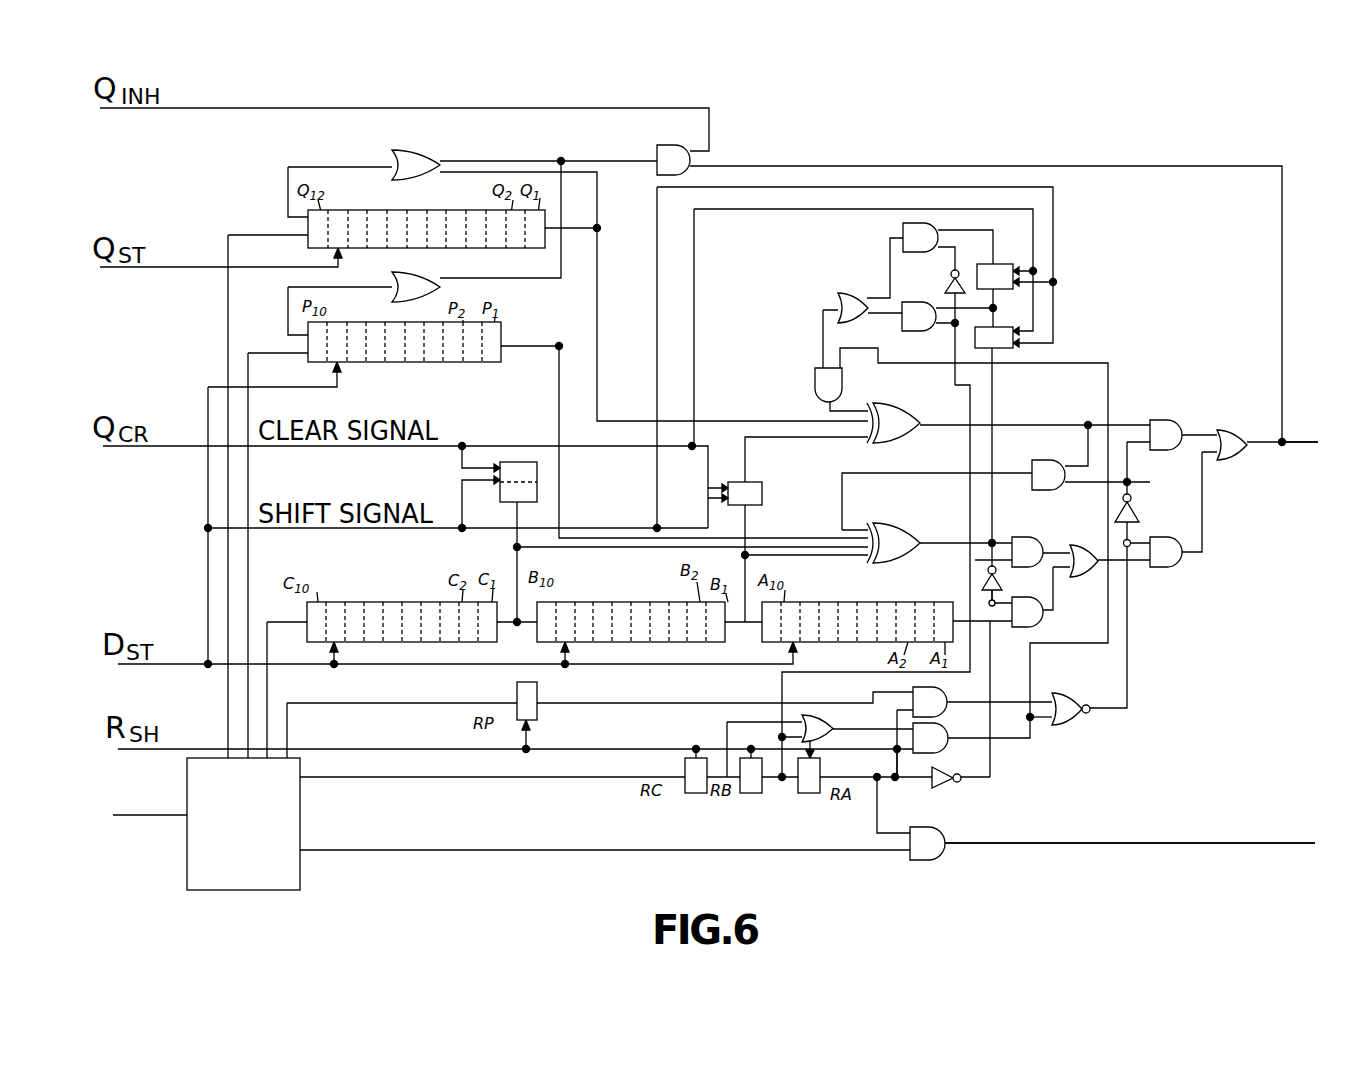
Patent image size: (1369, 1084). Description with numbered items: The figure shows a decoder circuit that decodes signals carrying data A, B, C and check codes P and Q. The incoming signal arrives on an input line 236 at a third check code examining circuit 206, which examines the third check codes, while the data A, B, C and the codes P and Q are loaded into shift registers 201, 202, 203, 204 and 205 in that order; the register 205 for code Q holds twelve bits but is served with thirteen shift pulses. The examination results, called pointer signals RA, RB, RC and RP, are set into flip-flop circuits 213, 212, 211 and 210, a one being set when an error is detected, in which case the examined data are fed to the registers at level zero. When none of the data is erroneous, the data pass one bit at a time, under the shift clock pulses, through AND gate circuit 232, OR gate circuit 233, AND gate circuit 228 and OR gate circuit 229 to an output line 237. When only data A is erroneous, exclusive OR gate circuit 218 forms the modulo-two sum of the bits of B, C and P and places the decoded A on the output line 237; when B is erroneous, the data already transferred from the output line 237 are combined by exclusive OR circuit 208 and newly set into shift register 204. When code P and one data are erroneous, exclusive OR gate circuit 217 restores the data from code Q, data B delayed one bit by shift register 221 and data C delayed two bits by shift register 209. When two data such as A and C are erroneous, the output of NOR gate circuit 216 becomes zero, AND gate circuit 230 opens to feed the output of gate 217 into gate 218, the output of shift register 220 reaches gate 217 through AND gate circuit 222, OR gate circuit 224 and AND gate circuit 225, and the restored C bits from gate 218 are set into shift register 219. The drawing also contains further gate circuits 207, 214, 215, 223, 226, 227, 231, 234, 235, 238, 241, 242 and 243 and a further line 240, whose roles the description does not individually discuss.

The shift register 201 is at (885, 602).
The shift register 202 is at (618, 602).
The shift register 203 is at (404, 602).
The shift register 204 is at (392, 366).
The shift register 205 is at (375, 210).
The third check code examining circuit 206 is at (300, 822).
The exclusive OR gate 207 is at (405, 150).
The exclusive OR circuit 208 is at (400, 282).
The shift register 209 is at (502, 497).
The flip-flop circuit 210 is at (538, 690).
The flip-flop circuit 211 is at (695, 793).
The flip-flop circuit 212 is at (752, 793).
The flip-flop circuit 213 is at (810, 793).
The OR gate 214 is at (836, 720).
The AND gate 215 is at (941, 722).
The NOR gate circuit 216 is at (1084, 688).
The exclusive OR gate circuit 217 is at (908, 410).
The exclusive OR gate circuit 218 is at (898, 523).
The shift register 219 is at (1017, 335).
The shift register 220 is at (1017, 268).
The shift register 221 is at (767, 492).
The AND gate circuit 222 is at (903, 232).
The AND gate 223 is at (910, 330).
The OR gate circuit 224 is at (847, 296).
The AND gate circuit 225 is at (815, 385).
The inverter 226 is at (950, 282).
The AND gate 227 is at (1170, 420).
The AND gate circuit 228 is at (1168, 526).
The OR gate circuit 229 is at (1225, 430).
The AND gate circuit 230 is at (1056, 460).
The AND gate 231 is at (1022, 537).
The AND gate circuit 232 is at (1044, 620).
The OR gate circuit 233 is at (1088, 546).
The inverter 234 is at (996, 578).
The inverter 235 is at (1133, 505).
The input line 236 is at (143, 815).
The output line 237 is at (1297, 441).
The inverter 238 is at (940, 769).
The output line 240 is at (1148, 843).
The AND gate 241 is at (666, 150).
The AND gate 242 is at (940, 690).
The AND gate 243 is at (910, 858).